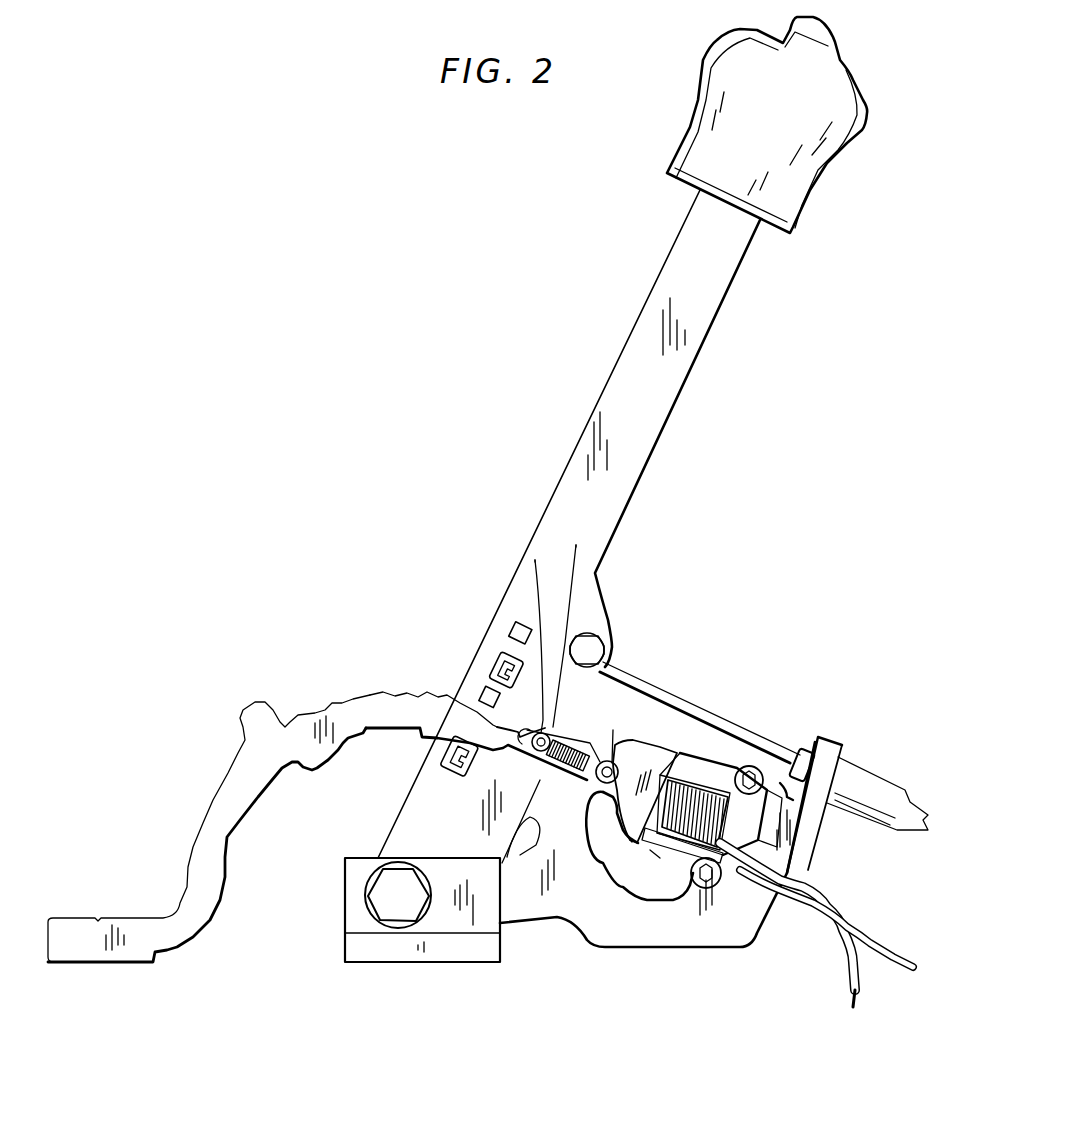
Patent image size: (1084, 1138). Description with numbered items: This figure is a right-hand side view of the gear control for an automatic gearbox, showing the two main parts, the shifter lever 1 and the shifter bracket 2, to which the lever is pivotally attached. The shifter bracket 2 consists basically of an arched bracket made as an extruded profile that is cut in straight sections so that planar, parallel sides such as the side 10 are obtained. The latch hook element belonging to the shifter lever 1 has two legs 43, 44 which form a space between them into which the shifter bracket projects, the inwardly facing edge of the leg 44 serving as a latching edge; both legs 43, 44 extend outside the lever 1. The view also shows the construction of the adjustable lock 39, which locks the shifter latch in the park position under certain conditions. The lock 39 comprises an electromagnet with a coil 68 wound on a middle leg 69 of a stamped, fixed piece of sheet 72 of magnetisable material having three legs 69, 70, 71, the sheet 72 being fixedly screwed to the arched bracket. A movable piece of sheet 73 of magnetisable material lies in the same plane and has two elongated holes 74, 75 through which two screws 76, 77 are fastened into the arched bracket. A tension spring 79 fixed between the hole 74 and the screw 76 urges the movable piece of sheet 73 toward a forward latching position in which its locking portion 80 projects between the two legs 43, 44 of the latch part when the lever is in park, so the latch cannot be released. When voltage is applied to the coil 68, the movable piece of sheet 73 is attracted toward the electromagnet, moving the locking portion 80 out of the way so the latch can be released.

The shifter lever 1 is at (617, 355).
The shifter bracket 2 is at (204, 828).
The planar side of arched bracket 10 is at (285, 728).
The adjustable lock 39 is at (630, 838).
The leg of latch hook element 43 is at (493, 677).
The leg of latch hook element 44 is at (463, 740).
The coil 68 is at (760, 752).
The middle leg 69 is at (707, 767).
The leg of fixed piece of sheet 70 is at (747, 752).
The leg of fixed piece of sheet 71 is at (660, 847).
The fixed piece of sheet 72 is at (668, 855).
The movable piece of sheet 73 is at (662, 747).
The elongated hole 74 is at (597, 760).
The elongated hole 75 is at (535, 560).
The screw 76 is at (576, 545).
The screw 77 is at (623, 762).
The tension spring 79 is at (572, 775).
The locking portion 80 is at (497, 727).